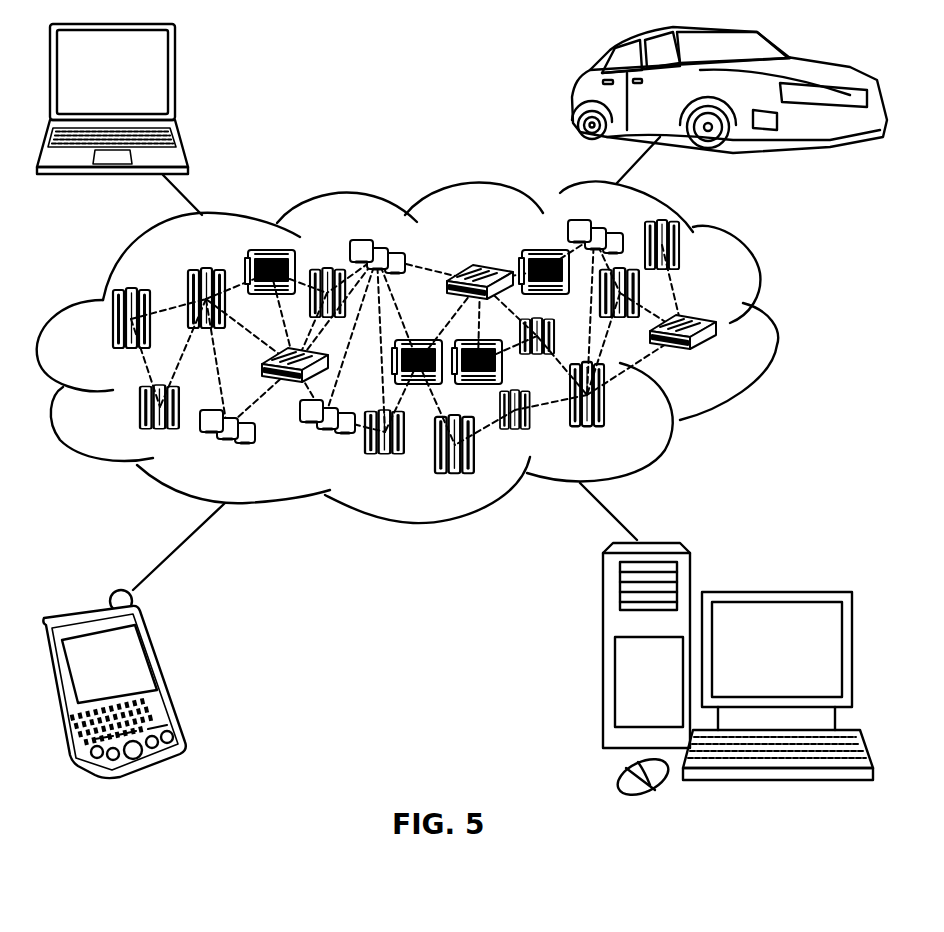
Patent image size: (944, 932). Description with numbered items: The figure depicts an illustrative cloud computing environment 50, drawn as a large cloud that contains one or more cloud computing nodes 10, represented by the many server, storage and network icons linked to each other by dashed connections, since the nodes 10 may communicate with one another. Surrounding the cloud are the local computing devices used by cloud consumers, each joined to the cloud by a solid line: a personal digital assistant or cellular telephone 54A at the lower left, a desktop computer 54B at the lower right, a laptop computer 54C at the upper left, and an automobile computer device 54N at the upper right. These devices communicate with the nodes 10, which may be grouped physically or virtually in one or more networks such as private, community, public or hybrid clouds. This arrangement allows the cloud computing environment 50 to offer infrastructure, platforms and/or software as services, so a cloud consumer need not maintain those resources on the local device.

The cloud computing node 10 is at (718, 356).
The cloud computing environment 50 is at (432, 352).
The personal digital assistant or cellular telephone 54A is at (168, 678).
The desktop computer 54B is at (772, 592).
The laptop computer 54C is at (177, 81).
The automobile computer device 54N is at (576, 96).